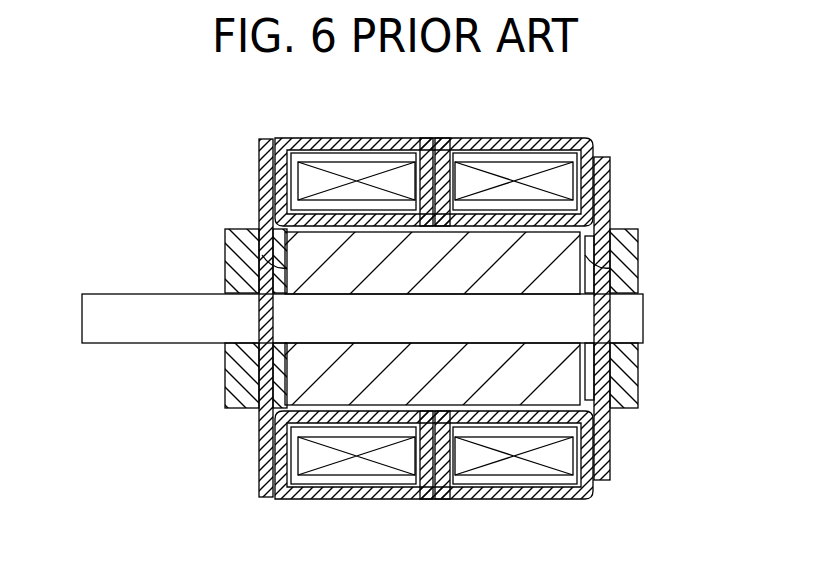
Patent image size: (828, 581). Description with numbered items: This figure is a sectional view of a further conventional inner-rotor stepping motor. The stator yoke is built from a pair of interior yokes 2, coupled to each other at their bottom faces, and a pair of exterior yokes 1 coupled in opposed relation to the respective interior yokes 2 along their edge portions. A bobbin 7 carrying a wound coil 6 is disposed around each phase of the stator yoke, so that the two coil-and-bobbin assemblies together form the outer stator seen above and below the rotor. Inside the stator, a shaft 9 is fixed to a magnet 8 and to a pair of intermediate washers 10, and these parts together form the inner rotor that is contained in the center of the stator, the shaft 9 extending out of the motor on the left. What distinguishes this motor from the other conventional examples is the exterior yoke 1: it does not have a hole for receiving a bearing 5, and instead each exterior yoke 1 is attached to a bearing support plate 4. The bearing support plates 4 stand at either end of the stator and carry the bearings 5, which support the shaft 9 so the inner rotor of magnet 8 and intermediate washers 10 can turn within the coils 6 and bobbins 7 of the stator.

The exterior yoke 1 is at (277, 141).
The interior yoke 2 is at (425, 141).
The bearing support plate 4 is at (259, 163).
The bearing 5 is at (245, 364).
The coil 6 is at (355, 463).
The bobbin 7 is at (408, 458).
The magnet 8 is at (525, 248).
The shaft 9 is at (101, 306).
The intermediate washer 10 is at (273, 268).